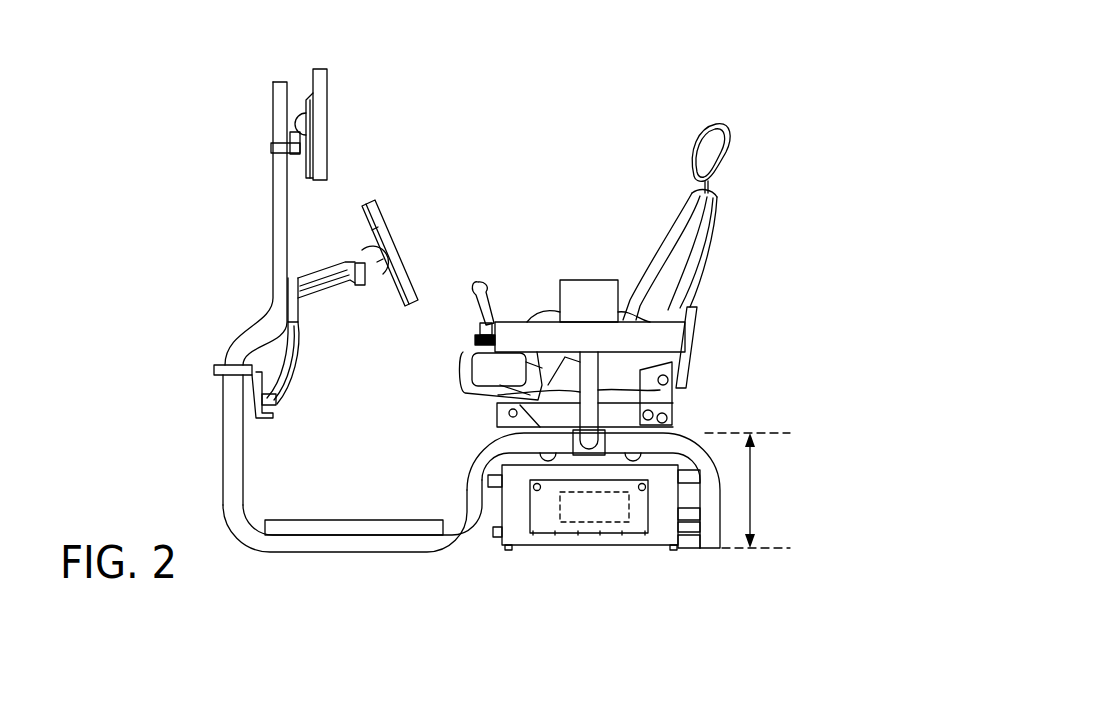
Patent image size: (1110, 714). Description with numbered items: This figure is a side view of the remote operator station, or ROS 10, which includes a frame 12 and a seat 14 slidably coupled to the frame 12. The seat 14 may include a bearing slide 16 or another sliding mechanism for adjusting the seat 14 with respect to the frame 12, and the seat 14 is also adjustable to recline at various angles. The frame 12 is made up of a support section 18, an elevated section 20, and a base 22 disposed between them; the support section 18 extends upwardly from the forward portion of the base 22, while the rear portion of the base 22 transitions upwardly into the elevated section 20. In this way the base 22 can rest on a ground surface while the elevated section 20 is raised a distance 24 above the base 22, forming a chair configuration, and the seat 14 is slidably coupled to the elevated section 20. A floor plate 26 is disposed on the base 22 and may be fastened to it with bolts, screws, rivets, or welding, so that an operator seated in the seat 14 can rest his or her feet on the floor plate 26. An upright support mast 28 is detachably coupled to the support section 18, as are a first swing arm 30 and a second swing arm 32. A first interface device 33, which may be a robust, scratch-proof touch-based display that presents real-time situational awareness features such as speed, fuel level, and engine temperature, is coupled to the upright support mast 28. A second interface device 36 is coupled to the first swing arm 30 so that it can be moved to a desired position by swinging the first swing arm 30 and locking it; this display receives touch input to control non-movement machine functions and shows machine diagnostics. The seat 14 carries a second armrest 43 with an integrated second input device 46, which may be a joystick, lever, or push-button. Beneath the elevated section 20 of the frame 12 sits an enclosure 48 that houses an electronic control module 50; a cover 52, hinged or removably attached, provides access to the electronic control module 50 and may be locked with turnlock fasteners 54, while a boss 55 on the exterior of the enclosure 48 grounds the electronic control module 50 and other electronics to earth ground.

The ROS 10 is at (712, 74).
The frame 12 is at (446, 482).
The seat 14 is at (703, 197).
The bearing slide 16 is at (497, 427).
The support section 18 is at (228, 447).
The elevated section 20 is at (680, 440).
The base 22 is at (360, 545).
The distance 24 is at (755, 490).
The floor plate 26 is at (333, 523).
The upright support mast 28 is at (280, 208).
The first swing arm 30 is at (287, 358).
The second swing arm 32 is at (320, 278).
The first interface device 33 is at (325, 93).
The second interface device 36 is at (398, 247).
The second armrest 43 is at (528, 320).
The second input device 46 is at (475, 295).
The enclosure 48 is at (670, 535).
The electronic control module 50 is at (598, 517).
The cover 52 is at (547, 522).
The turnlock fasteners 54 is at (535, 490).
The boss 55 is at (497, 532).